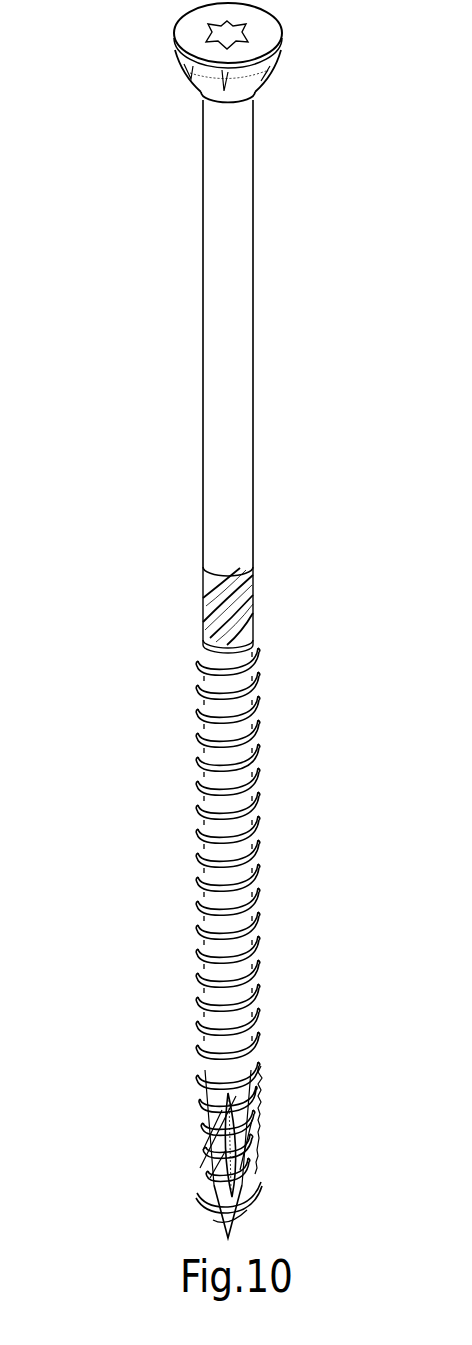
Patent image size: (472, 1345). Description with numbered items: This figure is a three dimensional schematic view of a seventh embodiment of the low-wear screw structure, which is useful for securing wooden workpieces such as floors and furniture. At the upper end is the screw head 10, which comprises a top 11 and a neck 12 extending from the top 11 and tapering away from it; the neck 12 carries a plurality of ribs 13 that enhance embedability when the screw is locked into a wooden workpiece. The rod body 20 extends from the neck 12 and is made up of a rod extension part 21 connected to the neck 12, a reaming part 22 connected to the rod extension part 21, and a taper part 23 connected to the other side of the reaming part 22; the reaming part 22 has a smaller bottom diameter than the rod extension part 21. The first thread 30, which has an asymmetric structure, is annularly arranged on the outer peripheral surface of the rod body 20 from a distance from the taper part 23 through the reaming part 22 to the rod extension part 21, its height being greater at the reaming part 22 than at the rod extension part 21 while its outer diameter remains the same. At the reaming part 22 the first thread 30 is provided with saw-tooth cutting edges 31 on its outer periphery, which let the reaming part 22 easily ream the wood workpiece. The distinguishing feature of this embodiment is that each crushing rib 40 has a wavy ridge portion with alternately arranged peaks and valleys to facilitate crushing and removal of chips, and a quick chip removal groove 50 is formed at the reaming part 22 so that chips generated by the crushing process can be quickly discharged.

The screw head 10 is at (160, 3).
The top 11 is at (267, 32).
The neck 12 is at (242, 90).
The ribs 13 is at (268, 71).
The rod body 20 is at (106, 103).
The rod extension part 21 is at (160, 103).
The reaming part 22 is at (160, 1065).
The taper part 23 is at (160, 1185).
The first thread 30 is at (263, 962).
The saw-tooth cutting edges 31 is at (253, 1072).
The crushing rib 40 is at (256, 1125).
The quick chip removal groove 50 is at (242, 1163).